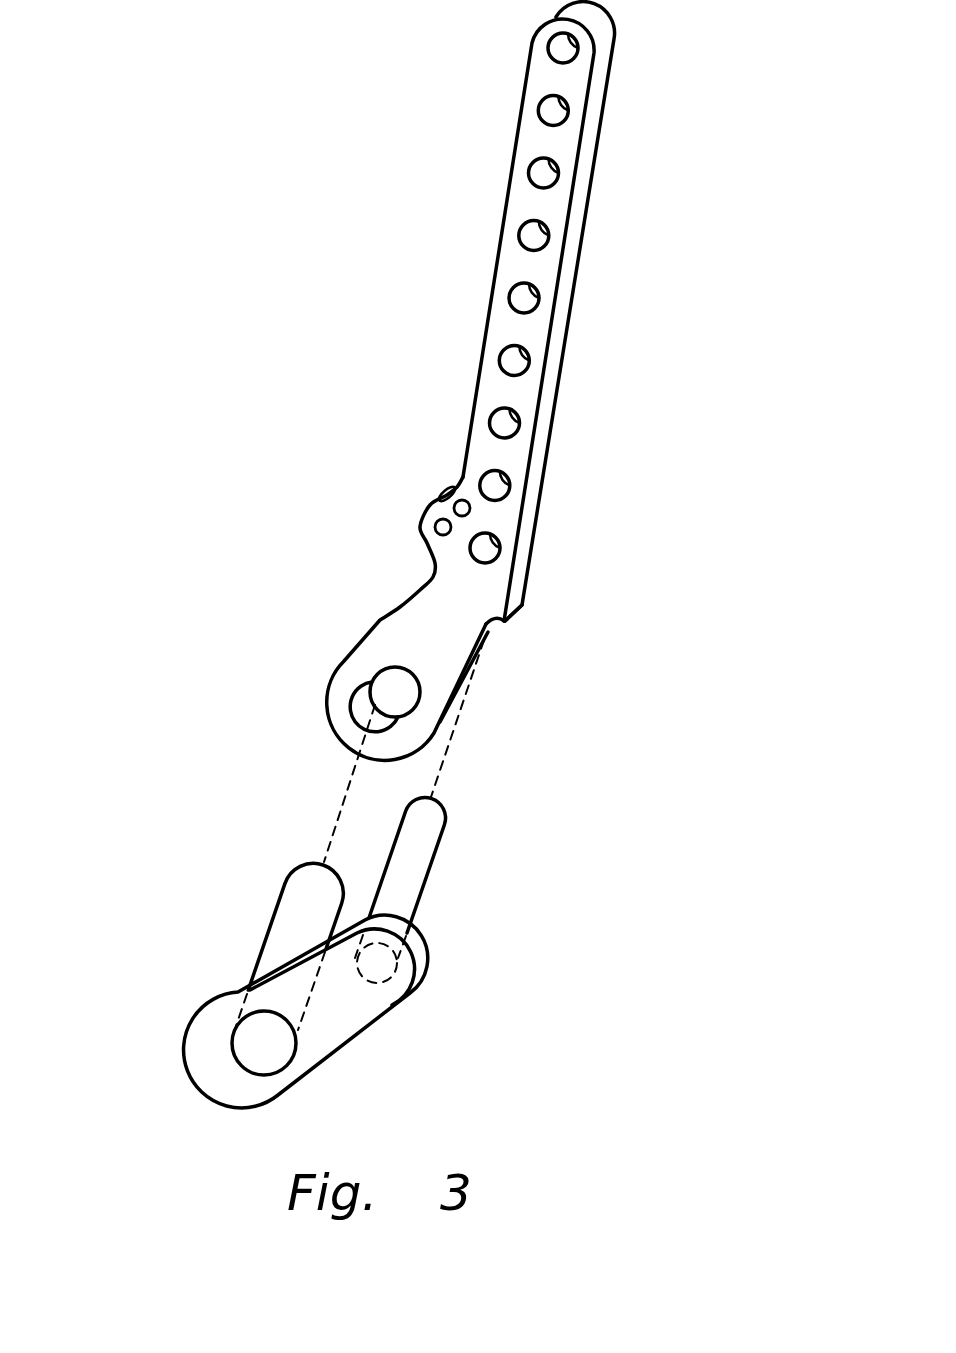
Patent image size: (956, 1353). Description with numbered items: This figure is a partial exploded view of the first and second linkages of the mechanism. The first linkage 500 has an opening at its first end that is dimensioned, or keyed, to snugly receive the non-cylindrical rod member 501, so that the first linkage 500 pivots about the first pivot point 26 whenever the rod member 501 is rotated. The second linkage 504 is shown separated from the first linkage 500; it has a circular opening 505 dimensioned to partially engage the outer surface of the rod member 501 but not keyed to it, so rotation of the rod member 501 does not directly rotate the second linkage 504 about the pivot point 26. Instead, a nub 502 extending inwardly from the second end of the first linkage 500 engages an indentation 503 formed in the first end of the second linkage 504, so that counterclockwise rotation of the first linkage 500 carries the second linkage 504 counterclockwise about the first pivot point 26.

The first pivot point 26 is at (253, 1047).
The first linkage 500 is at (363, 1017).
The rod member 501 is at (293, 897).
The nub 502 is at (425, 857).
The indentation 503 is at (530, 622).
The second linkage 504 is at (533, 337).
The eye hole 505 is at (363, 702).